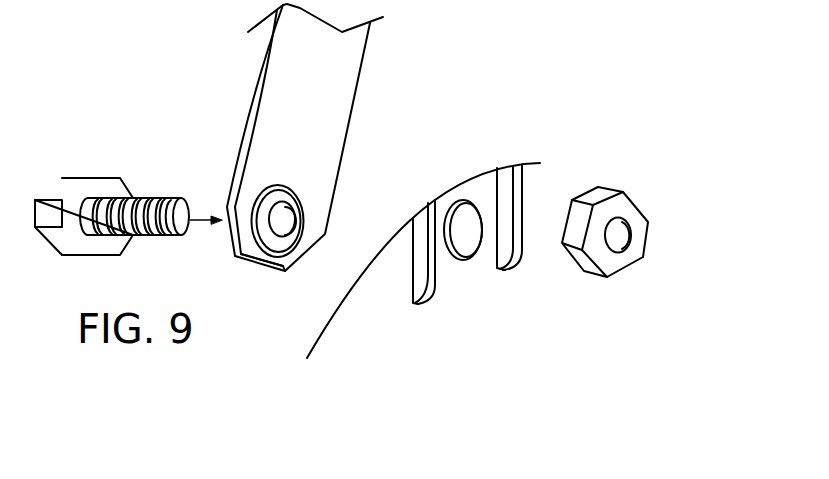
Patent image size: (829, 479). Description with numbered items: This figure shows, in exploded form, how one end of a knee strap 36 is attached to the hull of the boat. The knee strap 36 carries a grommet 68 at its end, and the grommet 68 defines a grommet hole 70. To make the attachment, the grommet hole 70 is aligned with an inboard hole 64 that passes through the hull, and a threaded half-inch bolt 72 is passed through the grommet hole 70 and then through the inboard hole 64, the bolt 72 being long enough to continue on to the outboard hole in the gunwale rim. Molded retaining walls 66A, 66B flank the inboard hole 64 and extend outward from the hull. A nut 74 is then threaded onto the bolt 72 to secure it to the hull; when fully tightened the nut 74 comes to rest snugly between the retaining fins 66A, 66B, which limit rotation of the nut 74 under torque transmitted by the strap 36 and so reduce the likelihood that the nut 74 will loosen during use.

The bolt 72 is at (133, 198).
The knee strap 36 is at (352, 108).
The grommet 68 is at (303, 206).
The grommet hole 70 is at (287, 222).
The retaining wall 66A is at (398, 275).
The retaining wall 66B is at (508, 270).
The inboard hole 64 is at (457, 230).
The nut 74 is at (648, 222).